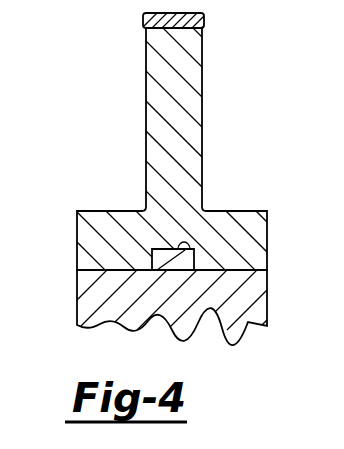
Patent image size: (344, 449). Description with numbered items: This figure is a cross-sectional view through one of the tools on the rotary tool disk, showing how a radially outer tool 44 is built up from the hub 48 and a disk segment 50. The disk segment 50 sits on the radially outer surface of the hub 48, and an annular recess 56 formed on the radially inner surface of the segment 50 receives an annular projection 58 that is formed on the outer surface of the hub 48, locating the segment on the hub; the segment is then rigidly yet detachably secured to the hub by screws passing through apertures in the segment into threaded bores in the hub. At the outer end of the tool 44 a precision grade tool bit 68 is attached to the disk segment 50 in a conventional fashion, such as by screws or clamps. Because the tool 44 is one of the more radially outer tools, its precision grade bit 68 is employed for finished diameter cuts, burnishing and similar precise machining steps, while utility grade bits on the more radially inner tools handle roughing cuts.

The tool 44 is at (172, 184).
The hub 48 is at (258, 299).
The disk segment 50 is at (103, 222).
The groove 56 is at (158, 262).
The annular projection 58 is at (191, 249).
The precision grade tool bit 68 is at (203, 23).